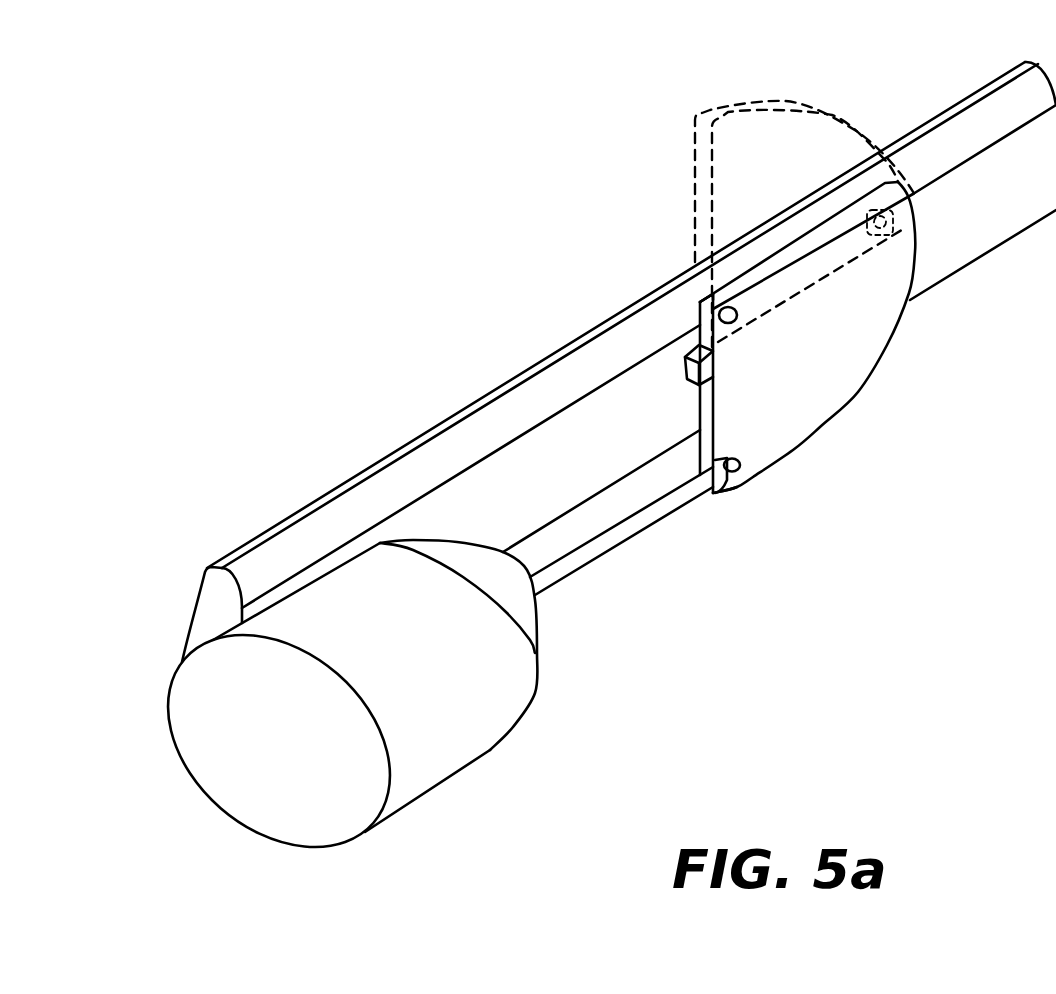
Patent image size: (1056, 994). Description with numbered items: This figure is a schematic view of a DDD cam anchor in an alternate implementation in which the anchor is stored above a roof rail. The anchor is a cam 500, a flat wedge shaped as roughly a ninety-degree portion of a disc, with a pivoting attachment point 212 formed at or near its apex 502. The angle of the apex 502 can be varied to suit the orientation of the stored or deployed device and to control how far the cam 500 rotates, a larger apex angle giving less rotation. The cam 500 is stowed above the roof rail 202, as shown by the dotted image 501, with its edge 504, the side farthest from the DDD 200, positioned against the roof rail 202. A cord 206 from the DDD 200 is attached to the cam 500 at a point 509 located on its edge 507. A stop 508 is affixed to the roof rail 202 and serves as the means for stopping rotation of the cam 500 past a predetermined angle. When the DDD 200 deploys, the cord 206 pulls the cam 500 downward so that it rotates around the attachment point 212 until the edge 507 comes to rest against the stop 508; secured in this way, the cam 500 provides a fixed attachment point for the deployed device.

The DDD 200 is at (457, 768).
The roof rail 202 is at (937, 183).
The cord 206 is at (605, 556).
The pivoting attachment point 212 is at (699, 300).
The cam 500 is at (699, 403).
The dotted image 501 is at (737, 98).
The apex 502 is at (722, 310).
The edge 504 is at (847, 216).
The edge 507 is at (715, 437).
The stop 508 is at (685, 377).
The point 509 is at (737, 478).